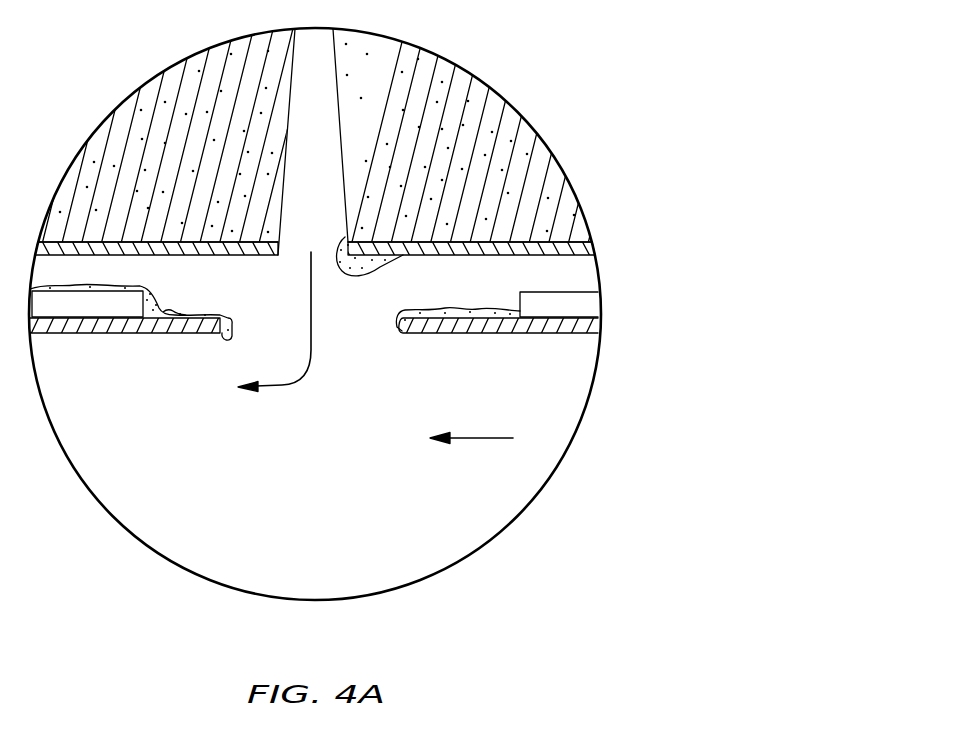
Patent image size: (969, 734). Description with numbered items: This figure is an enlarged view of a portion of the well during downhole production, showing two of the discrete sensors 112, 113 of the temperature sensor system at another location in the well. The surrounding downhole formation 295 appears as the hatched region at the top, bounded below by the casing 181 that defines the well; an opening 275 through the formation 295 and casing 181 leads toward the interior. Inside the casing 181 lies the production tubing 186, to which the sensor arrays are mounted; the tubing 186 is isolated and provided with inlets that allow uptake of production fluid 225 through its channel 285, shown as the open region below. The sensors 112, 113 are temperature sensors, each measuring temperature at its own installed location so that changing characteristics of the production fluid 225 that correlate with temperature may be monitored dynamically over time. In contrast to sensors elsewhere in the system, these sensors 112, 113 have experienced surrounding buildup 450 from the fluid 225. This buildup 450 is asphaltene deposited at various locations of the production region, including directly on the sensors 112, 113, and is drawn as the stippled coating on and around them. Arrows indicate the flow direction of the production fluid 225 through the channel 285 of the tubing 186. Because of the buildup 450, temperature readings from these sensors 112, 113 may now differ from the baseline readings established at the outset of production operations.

The slot / opening in insulation 275 is at (322, 115).
The downhole formation 295 is at (449, 160).
The casing 181 is at (543, 250).
The production tubing 186 is at (568, 330).
The discrete sensor 112 is at (102, 314).
The discrete sensor 113 is at (553, 302).
The buildup 450 is at (153, 302).
The production fluid 225 is at (312, 356).
The channel 285 is at (275, 477).